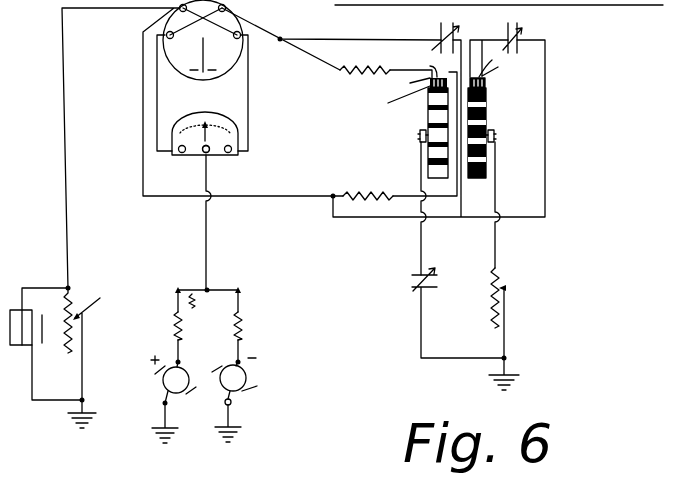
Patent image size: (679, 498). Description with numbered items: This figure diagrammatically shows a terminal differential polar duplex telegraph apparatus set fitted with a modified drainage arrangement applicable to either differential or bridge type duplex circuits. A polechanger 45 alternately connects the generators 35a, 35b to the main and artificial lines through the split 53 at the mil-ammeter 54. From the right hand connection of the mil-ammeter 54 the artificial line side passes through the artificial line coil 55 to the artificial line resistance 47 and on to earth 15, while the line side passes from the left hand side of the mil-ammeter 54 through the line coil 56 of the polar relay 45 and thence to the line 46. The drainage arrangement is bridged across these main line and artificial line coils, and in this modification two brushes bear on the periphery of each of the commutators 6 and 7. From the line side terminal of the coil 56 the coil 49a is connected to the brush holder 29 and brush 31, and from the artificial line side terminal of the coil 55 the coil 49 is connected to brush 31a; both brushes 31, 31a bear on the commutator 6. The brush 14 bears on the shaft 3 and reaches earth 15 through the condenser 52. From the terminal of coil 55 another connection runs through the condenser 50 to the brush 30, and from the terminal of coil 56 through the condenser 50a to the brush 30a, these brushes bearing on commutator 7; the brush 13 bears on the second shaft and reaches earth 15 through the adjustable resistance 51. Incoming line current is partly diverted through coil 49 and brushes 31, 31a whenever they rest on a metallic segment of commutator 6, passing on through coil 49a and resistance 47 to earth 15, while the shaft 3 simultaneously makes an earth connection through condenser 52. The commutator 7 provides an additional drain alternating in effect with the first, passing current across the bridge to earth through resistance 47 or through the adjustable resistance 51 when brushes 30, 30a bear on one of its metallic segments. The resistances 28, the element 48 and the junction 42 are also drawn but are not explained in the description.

The line 46 is at (499, 14).
The condenser 50 is at (461, 29).
The condenser 50a is at (524, 32).
The brush 31a is at (423, 64).
The brush 31 is at (410, 86).
The brush holder 29 is at (399, 99).
The commutator 6 is at (430, 98).
The shaft 3 is at (496, 132).
The brush 14 is at (420, 143).
The brush 13 is at (496, 139).
The commutator 7 is at (487, 103).
The brush 30a is at (496, 61).
The brush 30 is at (500, 65).
The resistance 28 is at (487, 82).
The coil 49 is at (372, 76).
The coil 49a is at (362, 181).
The polechanger 45 is at (228, 42).
The line coil 56 is at (180, 31).
The artificial line coil 55 is at (225, 31).
The mil-ammeter 54 is at (202, 95).
The split 53 is at (203, 157).
The artificial line resistance 47 is at (91, 344).
The cell 48 is at (38, 344).
The junction 42 is at (208, 290).
The generator 35a is at (157, 381).
The generator 35b is at (255, 368).
The condenser 52 is at (436, 272).
The adjustable resistance 51 is at (505, 288).
The earth 15 is at (503, 379).